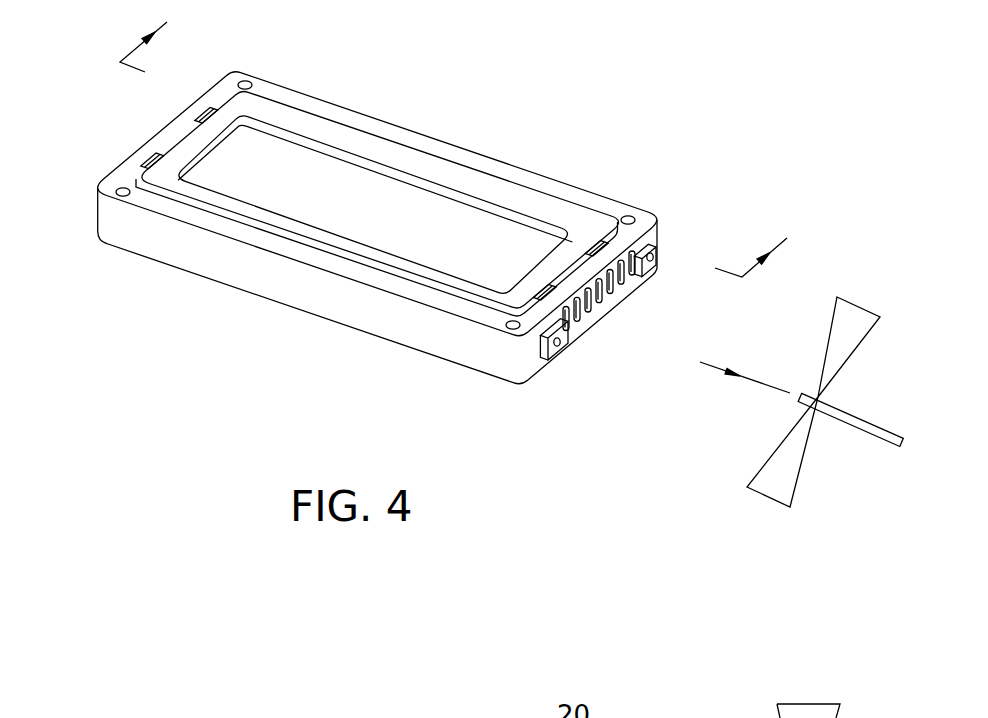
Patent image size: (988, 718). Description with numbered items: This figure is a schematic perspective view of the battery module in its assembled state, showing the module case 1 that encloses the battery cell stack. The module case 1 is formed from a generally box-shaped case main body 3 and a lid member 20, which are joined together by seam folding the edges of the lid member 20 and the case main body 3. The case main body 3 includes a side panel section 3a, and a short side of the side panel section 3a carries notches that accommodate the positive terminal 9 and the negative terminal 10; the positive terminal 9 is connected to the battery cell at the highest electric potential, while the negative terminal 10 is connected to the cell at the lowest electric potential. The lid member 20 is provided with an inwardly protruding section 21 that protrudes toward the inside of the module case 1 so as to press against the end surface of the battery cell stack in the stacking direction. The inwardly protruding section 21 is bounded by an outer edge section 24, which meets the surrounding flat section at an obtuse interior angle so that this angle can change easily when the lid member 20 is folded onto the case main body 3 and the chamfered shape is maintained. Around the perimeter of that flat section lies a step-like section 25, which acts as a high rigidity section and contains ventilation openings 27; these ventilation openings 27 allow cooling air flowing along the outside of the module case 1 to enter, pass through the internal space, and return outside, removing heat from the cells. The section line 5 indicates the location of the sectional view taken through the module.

The module case 1 is at (56, 146).
The case main body 3 is at (488, 380).
The side panel section 3a is at (328, 297).
The section line 5- 5 is at (454, 149).
The positive terminal 9 is at (558, 358).
The negative terminal 10 is at (655, 268).
The lid member 20 is at (562, 199).
The inwardly protruding section 21 is at (417, 227).
The outer edge section 24 is at (517, 213).
The step-like section 25 is at (589, 282).
The ventilation openings 27 is at (206, 108).